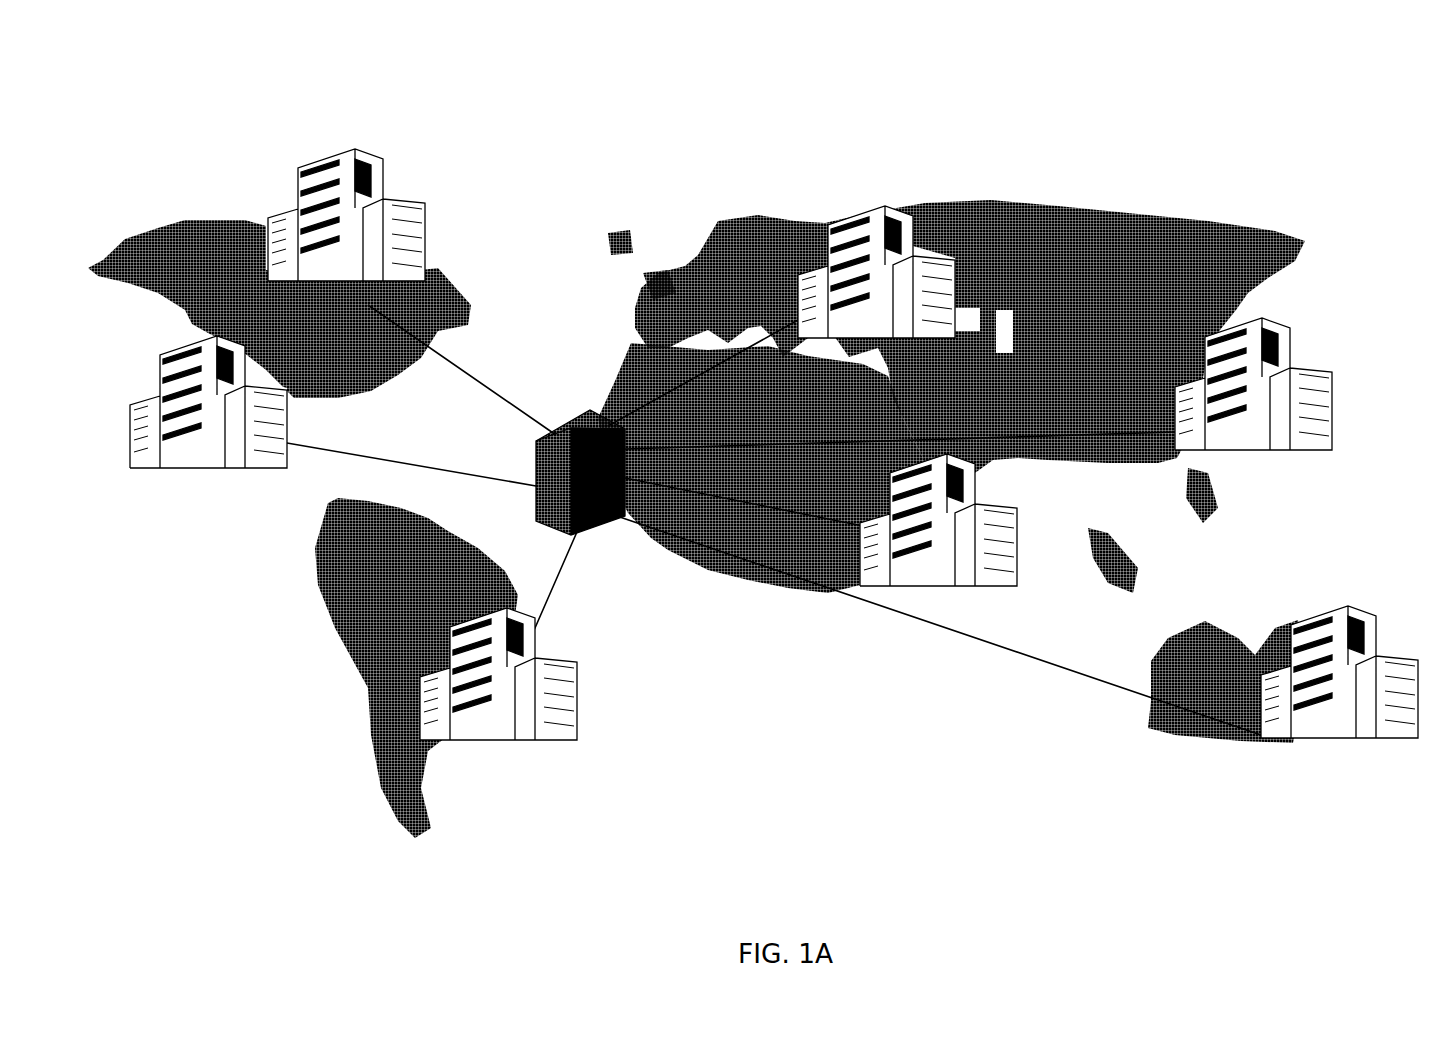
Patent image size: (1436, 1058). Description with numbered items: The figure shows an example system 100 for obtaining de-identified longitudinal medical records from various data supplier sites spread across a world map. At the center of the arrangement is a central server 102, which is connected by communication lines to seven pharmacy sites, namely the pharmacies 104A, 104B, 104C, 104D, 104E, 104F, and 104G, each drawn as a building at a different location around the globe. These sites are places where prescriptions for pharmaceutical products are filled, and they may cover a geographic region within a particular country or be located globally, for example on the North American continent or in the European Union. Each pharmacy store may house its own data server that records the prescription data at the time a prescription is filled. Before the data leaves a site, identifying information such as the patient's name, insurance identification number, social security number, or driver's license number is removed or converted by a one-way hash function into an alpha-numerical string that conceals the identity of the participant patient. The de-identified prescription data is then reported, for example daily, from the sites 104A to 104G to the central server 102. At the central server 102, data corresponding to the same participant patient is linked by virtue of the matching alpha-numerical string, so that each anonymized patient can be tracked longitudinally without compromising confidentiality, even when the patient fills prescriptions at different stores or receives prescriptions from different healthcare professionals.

The system 100 is at (699, 138).
The central server 102 is at (562, 420).
The pharmacy 104A is at (373, 163).
The pharmacy 104B is at (253, 373).
The pharmacy 104C is at (568, 676).
The pharmacy 104D is at (1012, 528).
The pharmacy 104E is at (882, 207).
The pharmacy 104F is at (1295, 352).
The pharmacy 104G is at (1378, 620).